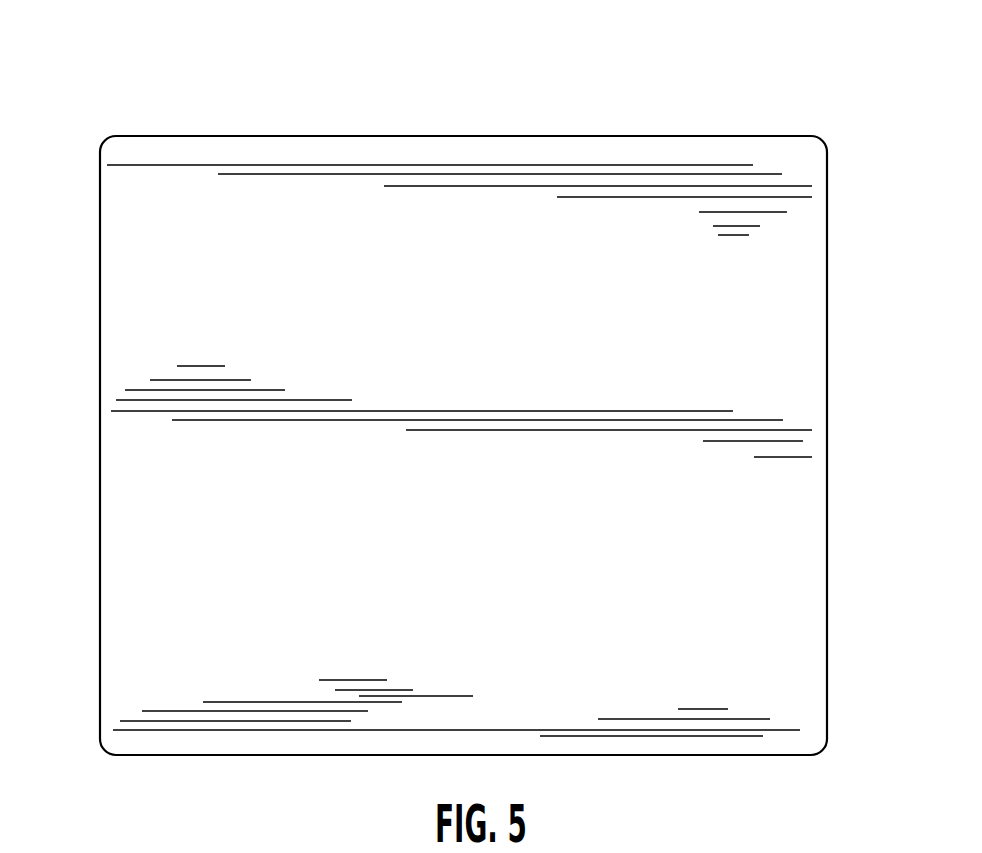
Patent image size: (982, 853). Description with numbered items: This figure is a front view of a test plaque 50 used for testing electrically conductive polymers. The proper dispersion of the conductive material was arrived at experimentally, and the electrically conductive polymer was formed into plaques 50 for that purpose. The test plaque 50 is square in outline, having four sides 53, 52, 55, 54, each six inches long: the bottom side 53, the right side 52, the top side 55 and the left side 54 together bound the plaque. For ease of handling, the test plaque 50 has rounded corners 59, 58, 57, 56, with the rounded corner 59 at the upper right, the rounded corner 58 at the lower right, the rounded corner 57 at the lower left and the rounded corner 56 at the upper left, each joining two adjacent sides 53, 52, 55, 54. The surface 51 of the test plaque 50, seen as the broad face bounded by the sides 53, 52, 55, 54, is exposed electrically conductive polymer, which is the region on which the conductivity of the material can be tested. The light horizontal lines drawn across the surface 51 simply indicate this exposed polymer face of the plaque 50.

The test plaque 50 is at (689, 85).
The surface 51 is at (757, 388).
The side 52 is at (828, 217).
The side 53 is at (603, 755).
The side 54 is at (99, 578).
The side 55 is at (219, 146).
The rounded corner 56 is at (107, 137).
The rounded corner 57 is at (108, 752).
The rounded corner 58 is at (812, 755).
The rounded corner 59 is at (818, 135).